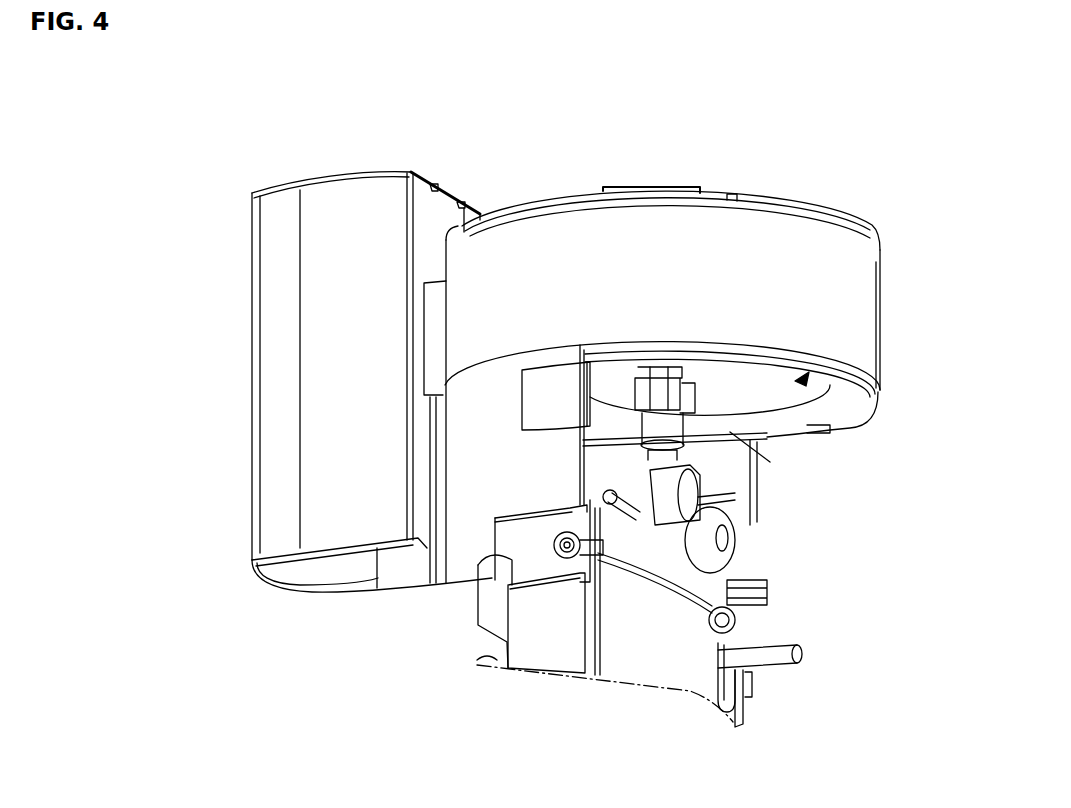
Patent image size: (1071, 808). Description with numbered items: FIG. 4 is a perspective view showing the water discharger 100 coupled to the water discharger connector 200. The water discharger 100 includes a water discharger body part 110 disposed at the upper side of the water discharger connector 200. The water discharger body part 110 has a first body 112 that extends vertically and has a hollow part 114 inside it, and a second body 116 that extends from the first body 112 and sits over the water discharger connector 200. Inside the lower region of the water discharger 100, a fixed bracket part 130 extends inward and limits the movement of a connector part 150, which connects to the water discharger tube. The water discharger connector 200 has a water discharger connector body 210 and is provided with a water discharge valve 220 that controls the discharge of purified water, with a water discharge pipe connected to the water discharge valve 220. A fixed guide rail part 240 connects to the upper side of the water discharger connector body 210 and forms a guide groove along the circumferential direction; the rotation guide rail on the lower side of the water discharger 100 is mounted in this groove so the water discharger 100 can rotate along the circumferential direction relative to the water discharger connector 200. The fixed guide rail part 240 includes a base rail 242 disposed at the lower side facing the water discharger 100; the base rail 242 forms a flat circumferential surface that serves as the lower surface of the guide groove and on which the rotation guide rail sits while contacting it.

The water discharger 100 is at (238, 288).
The water discharger body part 110 is at (420, 98).
The first body 112 is at (386, 195).
The hollow part 114 is at (284, 569).
The second body 116 is at (507, 232).
The fixed bracket part 130 is at (647, 400).
The connector part 150 is at (667, 430).
The water discharger connector 200 is at (458, 516).
The water discharger connector body 210 is at (493, 482).
The water discharge valve 220 is at (665, 488).
The fixed guide rail part 240 is at (587, 385).
The base rail 242 is at (845, 403).